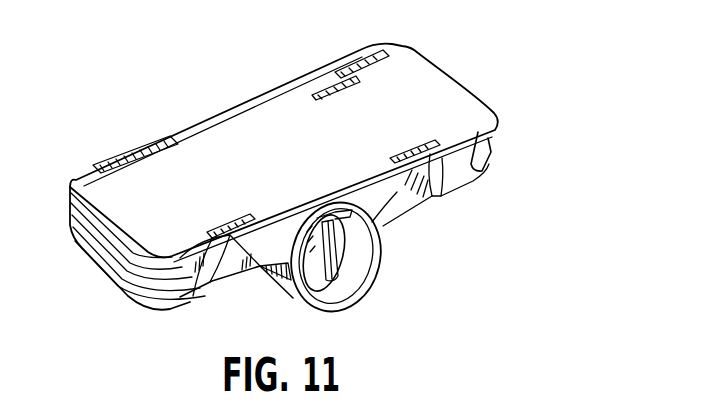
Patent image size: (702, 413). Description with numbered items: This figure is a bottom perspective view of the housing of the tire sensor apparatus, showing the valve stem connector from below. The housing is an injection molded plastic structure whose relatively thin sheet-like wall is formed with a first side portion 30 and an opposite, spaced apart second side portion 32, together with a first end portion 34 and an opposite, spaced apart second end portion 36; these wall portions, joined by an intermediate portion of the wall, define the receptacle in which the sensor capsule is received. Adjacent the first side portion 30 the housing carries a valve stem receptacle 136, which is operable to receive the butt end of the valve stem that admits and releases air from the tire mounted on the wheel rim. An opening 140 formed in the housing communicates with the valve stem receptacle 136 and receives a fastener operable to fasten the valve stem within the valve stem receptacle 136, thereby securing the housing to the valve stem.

The first side portion 30 is at (226, 108).
The second side portion 32 is at (400, 191).
The first end portion 34 is at (133, 292).
The second end portion 36 is at (491, 158).
The valve stem receptacle 136 is at (358, 242).
The opening 140 is at (333, 268).